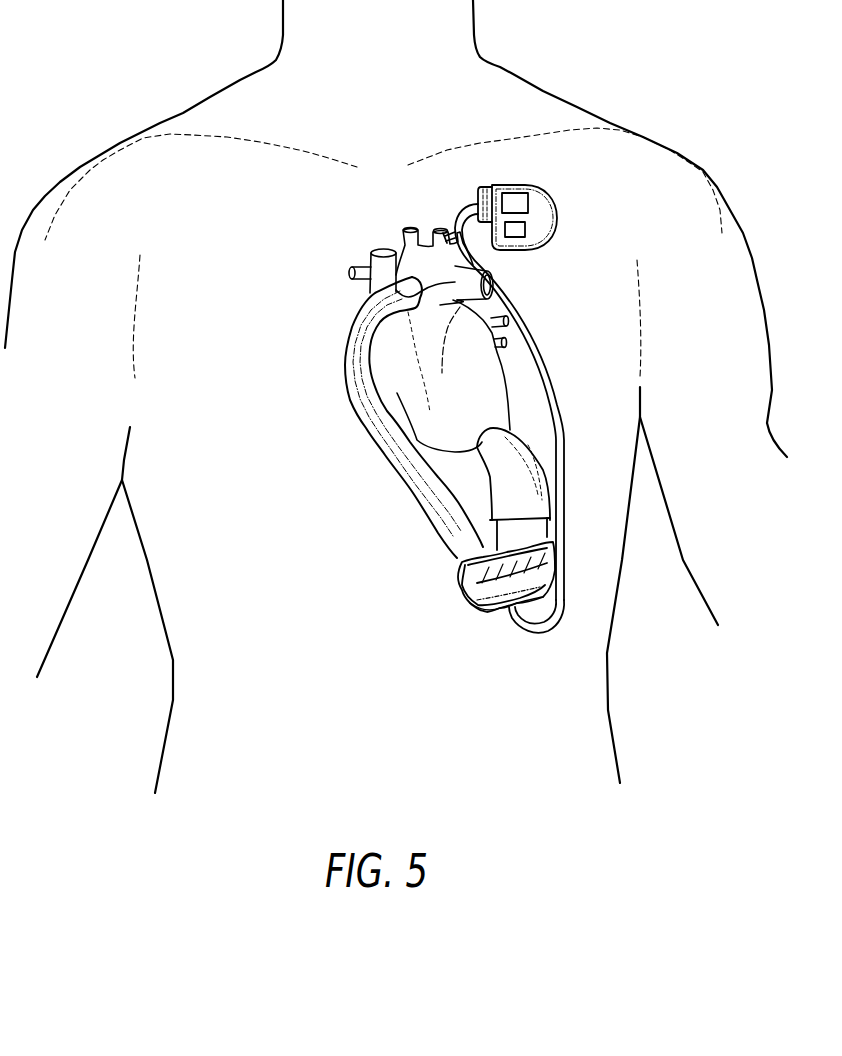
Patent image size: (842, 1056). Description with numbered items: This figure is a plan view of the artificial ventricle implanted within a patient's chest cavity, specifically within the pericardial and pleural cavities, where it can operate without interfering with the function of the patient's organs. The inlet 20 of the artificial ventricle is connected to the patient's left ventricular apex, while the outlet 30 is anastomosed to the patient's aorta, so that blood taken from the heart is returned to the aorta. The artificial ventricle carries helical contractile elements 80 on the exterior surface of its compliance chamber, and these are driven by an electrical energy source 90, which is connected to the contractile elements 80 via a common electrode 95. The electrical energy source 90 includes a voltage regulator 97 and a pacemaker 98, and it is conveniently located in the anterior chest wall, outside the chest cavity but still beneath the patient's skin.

The inlet 20 is at (532, 530).
The outlet 30 is at (455, 562).
The helical contractile elements 80 is at (480, 614).
The electrical energy source 90 is at (542, 195).
The common electrode 95 is at (528, 632).
The voltage regulator 97 is at (527, 230).
The pacemaker 98 is at (510, 193).